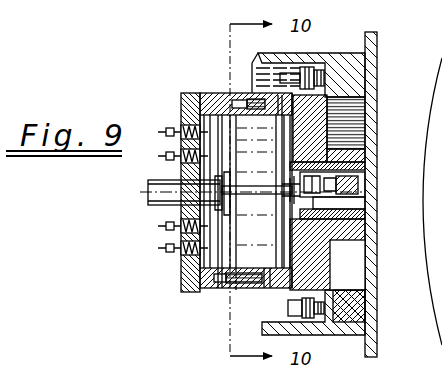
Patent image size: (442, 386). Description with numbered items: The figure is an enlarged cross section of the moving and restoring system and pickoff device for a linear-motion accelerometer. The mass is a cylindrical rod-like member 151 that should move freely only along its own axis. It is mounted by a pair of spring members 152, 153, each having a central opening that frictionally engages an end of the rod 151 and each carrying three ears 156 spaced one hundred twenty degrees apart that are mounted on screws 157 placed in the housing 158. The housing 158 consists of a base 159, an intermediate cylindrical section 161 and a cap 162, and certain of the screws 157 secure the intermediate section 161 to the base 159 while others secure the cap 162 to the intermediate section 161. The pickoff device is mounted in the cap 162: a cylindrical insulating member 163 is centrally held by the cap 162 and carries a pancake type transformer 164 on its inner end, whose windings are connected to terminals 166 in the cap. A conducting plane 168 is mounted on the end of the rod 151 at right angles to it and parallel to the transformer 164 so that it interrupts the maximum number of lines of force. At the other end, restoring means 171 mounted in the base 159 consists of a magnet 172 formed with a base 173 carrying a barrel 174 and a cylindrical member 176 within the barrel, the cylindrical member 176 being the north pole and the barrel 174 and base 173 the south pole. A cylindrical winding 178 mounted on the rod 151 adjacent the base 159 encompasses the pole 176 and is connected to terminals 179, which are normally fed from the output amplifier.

The cylindrical rod-like member 151 is at (261, 190).
The spring member 152 is at (226, 289).
The spring member 153 is at (278, 252).
The ears 156 is at (238, 292).
The screws 157 is at (246, 96).
The housing 158 is at (275, 287).
The base 159 is at (318, 243).
The intermediate cylindrical section 161 is at (229, 75).
The cap 162 is at (181, 101).
The cylindrical insulating member 163 is at (176, 196).
The pancake type transformer 164 is at (150, 184).
The terminals 166 is at (165, 156).
The conducting plane 168 is at (270, 162).
The restoring means 171 is at (345, 236).
The magnet 172 is at (358, 165).
The base 173 is at (360, 206).
The barrel 174 is at (355, 131).
The cylindrical member 176 is at (333, 196).
The cylindrical winding 178 is at (300, 201).
The terminals 179 is at (306, 77).